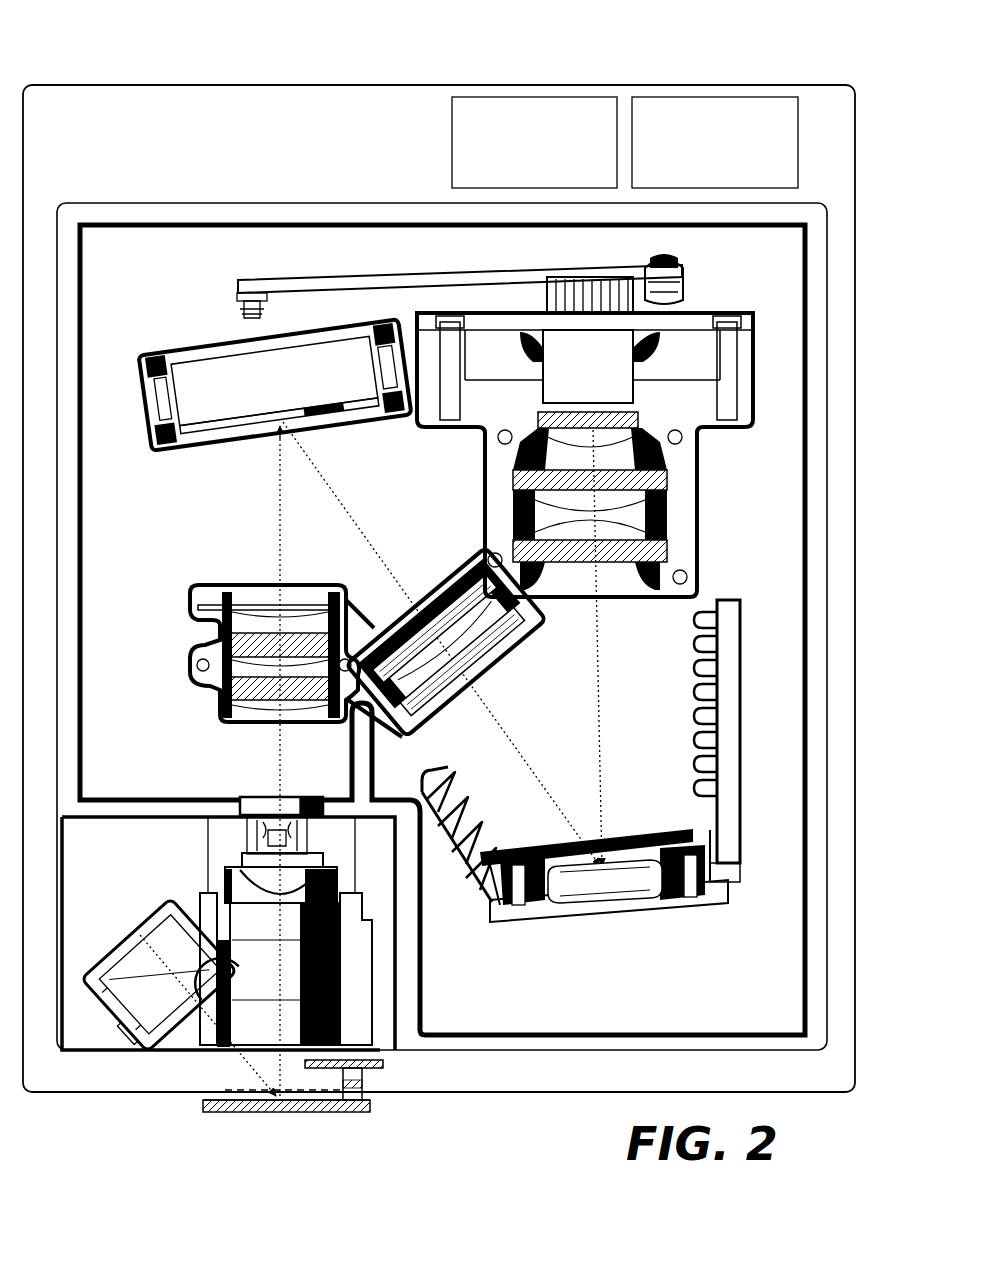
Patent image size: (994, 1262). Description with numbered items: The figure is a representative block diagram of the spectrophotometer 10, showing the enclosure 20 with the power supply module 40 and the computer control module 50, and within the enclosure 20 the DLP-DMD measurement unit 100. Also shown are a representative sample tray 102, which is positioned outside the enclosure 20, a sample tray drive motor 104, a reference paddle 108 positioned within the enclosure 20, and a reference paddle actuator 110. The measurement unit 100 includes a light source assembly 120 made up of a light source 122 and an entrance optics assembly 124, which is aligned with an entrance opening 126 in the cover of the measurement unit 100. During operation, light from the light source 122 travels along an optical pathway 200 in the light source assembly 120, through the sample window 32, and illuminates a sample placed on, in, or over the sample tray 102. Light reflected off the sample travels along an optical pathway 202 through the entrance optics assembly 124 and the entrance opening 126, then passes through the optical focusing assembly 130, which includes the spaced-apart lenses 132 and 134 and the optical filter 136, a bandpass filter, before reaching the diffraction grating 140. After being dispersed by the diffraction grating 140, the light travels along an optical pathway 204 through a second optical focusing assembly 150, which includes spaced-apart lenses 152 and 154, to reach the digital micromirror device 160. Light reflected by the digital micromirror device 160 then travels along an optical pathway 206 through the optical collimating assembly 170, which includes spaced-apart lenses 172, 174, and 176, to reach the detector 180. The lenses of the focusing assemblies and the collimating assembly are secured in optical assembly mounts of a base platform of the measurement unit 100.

The spectrophotometer 10 is at (86, 58).
The enclosure 20 is at (740, 85).
The power supply module 40 is at (534, 142).
The computer control module 50 is at (715, 142).
The DLP-DMD measurement unit 100 is at (160, 186).
The light source assembly 120 is at (138, 887).
The light source 122 is at (159, 975).
The entrance optics assembly 124 is at (286, 932).
The entrance opening 126 is at (248, 797).
The optical focusing assembly 130 is at (170, 597).
The lens 132 is at (228, 690).
The lens 134 is at (228, 648).
The optical filter 136 is at (228, 605).
The diffraction grating 140 is at (275, 385).
The optical focusing assembly 150 is at (505, 686).
The lens 152 is at (435, 629).
The lens 154 is at (405, 628).
The digital micromirror device 160 is at (607, 912).
The optical collimating assembly 170 is at (706, 512).
The lens 172 is at (668, 548).
The lens 174 is at (667, 476).
The lens 176 is at (536, 416).
The detector 180 is at (588, 366).
The optical pathway 200 is at (182, 998).
The optical pathway 202 is at (276, 508).
The optical pathway 204 is at (328, 480).
The optical pathway 206 is at (592, 655).
The sample window 32 is at (228, 1090).
The sample tray 102 is at (203, 1110).
The sample tray drive motor 104 is at (370, 1100).
The reference paddle 108 is at (382, 1062).
The reference paddle actuator 110 is at (363, 1085).